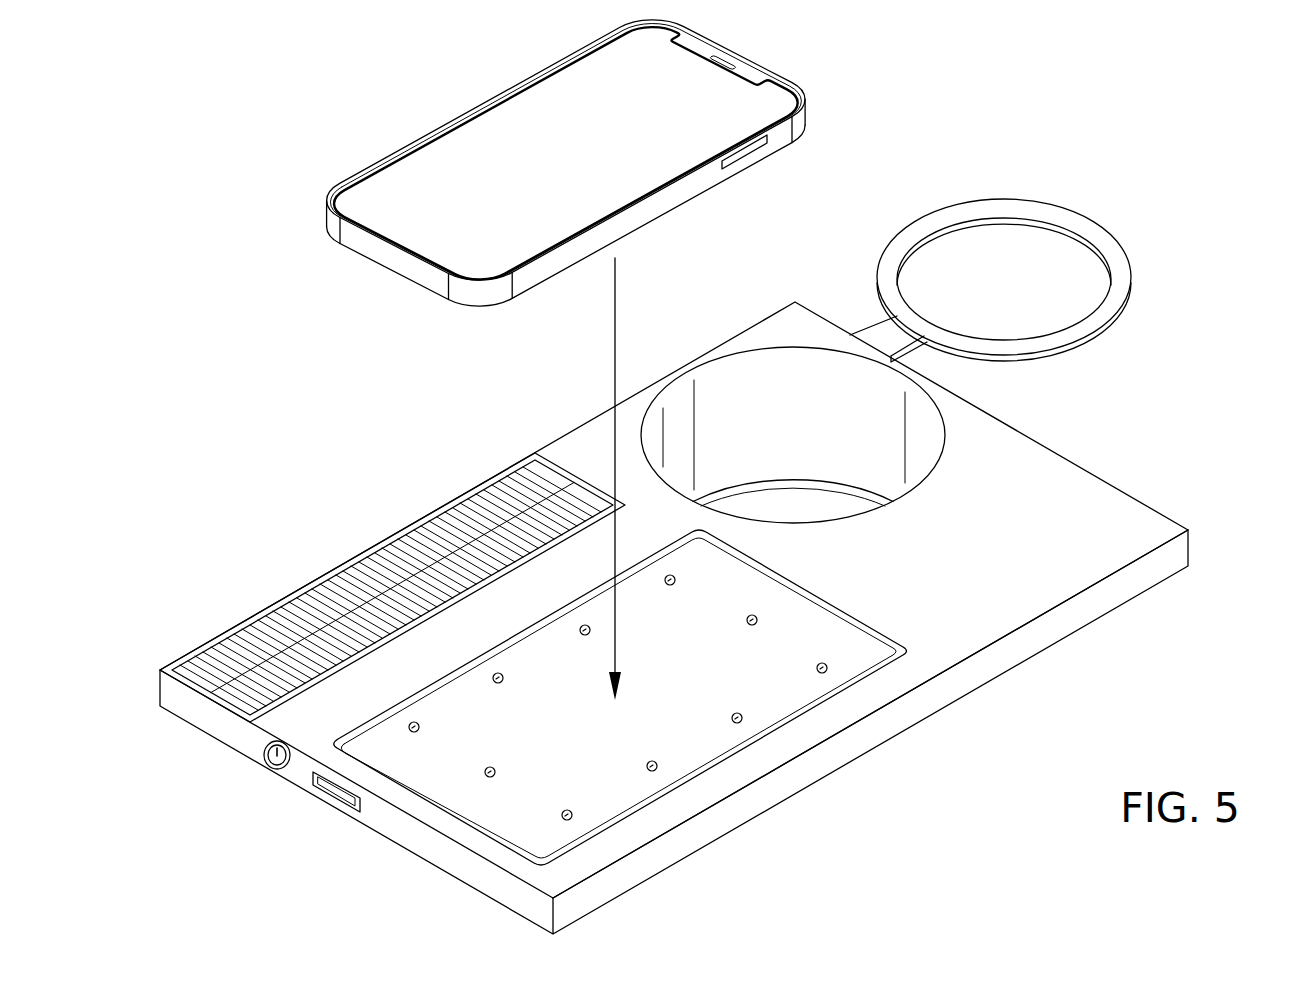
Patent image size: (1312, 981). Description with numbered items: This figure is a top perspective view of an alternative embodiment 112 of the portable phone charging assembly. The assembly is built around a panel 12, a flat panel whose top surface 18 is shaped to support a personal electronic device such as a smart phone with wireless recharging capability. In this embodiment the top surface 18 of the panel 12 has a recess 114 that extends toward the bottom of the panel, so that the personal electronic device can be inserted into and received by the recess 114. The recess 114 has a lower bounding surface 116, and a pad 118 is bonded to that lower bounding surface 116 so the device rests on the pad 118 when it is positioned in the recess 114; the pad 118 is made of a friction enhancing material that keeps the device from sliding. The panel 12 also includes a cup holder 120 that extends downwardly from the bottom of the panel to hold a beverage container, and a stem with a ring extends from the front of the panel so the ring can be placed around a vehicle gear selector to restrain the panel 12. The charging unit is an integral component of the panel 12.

The panel 12 is at (1189, 546).
The top surface 18 is at (800, 323).
The alternative embodiment 112 is at (1208, 392).
The recess 114 is at (811, 716).
The lower bounding surface 116 is at (733, 769).
The pad 118 is at (477, 804).
The cup holder 120 is at (717, 428).